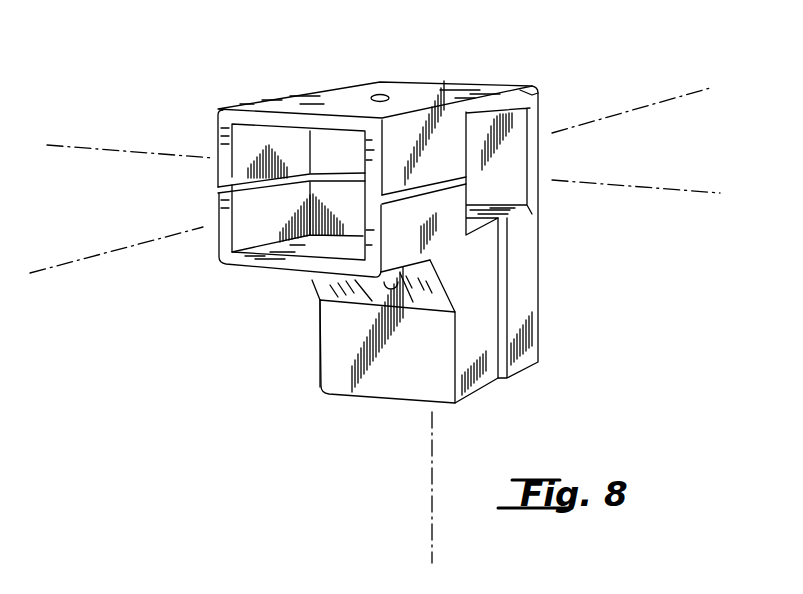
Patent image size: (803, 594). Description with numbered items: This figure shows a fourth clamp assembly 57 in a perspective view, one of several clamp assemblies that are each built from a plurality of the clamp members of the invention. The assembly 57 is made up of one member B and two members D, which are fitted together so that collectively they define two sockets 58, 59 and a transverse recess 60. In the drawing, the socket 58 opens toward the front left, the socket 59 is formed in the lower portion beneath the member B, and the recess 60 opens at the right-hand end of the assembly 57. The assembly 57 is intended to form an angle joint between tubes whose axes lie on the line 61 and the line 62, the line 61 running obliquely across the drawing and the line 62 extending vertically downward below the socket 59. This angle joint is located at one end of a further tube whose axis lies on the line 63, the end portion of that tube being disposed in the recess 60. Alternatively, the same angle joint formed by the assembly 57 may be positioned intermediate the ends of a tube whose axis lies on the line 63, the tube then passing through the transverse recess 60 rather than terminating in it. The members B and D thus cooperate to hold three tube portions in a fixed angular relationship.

The fourth clamp assembly 57 is at (394, 249).
The socket 58 is at (258, 222).
The socket 59 is at (371, 367).
The transverse recess 60 is at (503, 190).
The line 61 is at (108, 248).
The line 62 is at (431, 545).
The line 63 is at (132, 152).
The member B is at (318, 338).
The member D is at (297, 94).